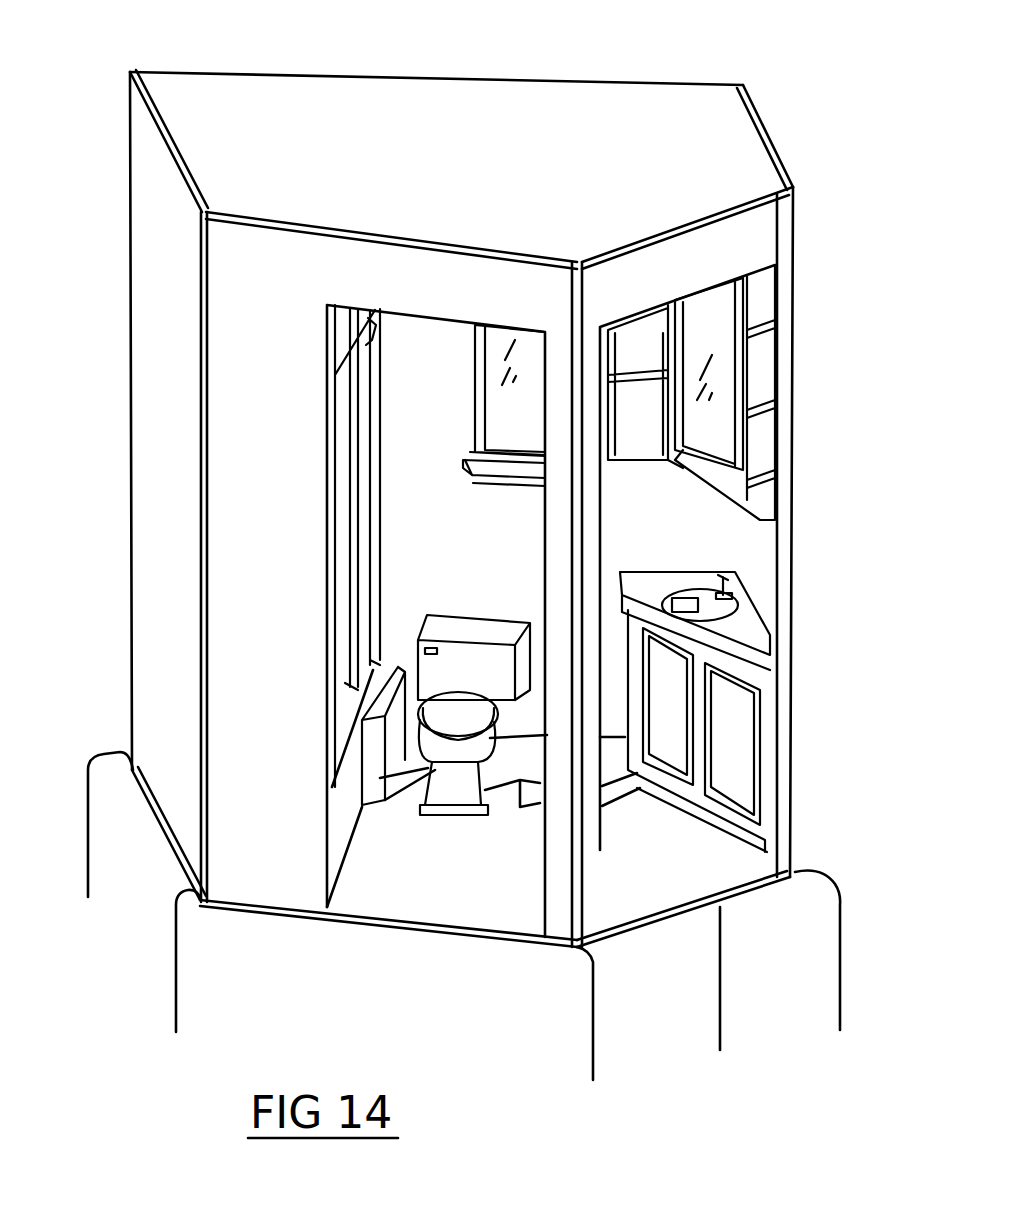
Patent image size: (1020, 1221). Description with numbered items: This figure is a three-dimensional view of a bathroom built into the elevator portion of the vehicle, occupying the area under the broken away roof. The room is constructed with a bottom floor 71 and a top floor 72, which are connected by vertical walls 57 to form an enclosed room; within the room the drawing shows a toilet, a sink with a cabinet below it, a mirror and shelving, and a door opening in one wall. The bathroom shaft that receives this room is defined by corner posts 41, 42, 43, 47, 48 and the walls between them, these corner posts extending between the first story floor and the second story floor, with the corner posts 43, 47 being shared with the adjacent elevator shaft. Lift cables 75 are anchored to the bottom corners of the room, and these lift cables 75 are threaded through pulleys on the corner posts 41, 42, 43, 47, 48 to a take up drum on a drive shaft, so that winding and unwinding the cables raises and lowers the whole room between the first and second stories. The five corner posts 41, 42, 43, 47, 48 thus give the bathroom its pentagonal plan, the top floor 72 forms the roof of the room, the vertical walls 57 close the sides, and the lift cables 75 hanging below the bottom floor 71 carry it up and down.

The corner post 41 is at (130, 72).
The corner post 42 is at (744, 86).
The corner post 43 is at (795, 187).
The corner post 47 is at (577, 262).
The corner post 48 is at (208, 213).
The vertical walls 57 is at (167, 299).
The bottom floor 71 is at (477, 871).
The top floor 72 is at (432, 116).
The lift cables 75 is at (88, 808).